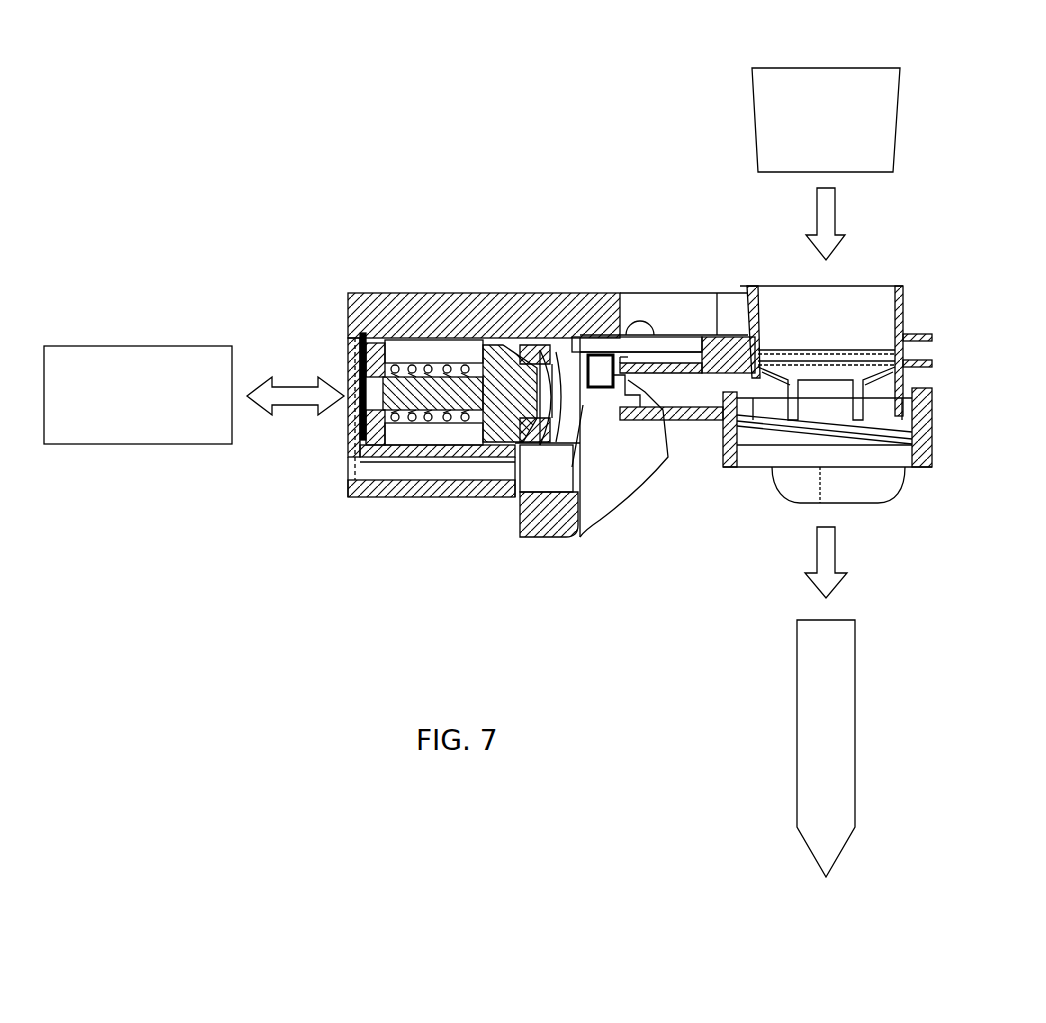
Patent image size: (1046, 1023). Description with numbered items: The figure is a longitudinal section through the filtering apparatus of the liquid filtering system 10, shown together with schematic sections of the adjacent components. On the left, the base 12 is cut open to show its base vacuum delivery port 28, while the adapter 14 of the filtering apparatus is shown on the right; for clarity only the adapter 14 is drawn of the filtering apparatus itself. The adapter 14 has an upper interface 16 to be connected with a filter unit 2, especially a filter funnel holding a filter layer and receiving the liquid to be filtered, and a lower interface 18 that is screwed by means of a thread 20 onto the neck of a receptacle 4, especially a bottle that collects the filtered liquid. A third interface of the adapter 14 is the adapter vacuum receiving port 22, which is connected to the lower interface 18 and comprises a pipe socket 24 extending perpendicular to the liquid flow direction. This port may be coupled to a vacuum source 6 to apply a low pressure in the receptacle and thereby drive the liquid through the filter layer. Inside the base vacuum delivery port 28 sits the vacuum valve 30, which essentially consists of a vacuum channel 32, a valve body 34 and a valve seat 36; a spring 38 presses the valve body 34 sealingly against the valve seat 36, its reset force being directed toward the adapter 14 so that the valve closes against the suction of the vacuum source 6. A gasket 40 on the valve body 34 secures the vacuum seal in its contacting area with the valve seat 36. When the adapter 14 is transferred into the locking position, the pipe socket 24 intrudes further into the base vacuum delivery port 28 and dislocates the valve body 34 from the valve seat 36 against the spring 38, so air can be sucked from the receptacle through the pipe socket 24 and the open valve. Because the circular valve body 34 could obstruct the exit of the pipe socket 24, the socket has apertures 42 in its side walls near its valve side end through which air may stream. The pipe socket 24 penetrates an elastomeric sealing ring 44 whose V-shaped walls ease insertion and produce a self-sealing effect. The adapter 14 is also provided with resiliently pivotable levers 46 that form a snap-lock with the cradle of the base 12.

The stopper/closure 2 is at (793, 90).
The spike/pointer 4 is at (815, 695).
The vacuum source 6 is at (100, 368).
The valve assembly 10 is at (343, 238).
The base 12 is at (362, 305).
The adapter 14 is at (820, 322).
The upper interface 16 is at (826, 297).
The lower interface 18 is at (863, 460).
The thread 20 is at (868, 437).
The adapter vacuum receiving port 22 is at (655, 357).
The pipe socket 24 is at (688, 400).
The base vacuum delivery port 28 is at (430, 355).
The vacuum valve 30 is at (372, 380).
The vacuum channel 32 is at (397, 428).
The valve body 34 is at (462, 400).
The valve seat 36 is at (509, 425).
The spring 38 is at (437, 418).
The gasket 40 is at (507, 355).
The apertures 42 is at (636, 397).
The sealing ring 44 is at (527, 347).
The levers 46 is at (850, 492).